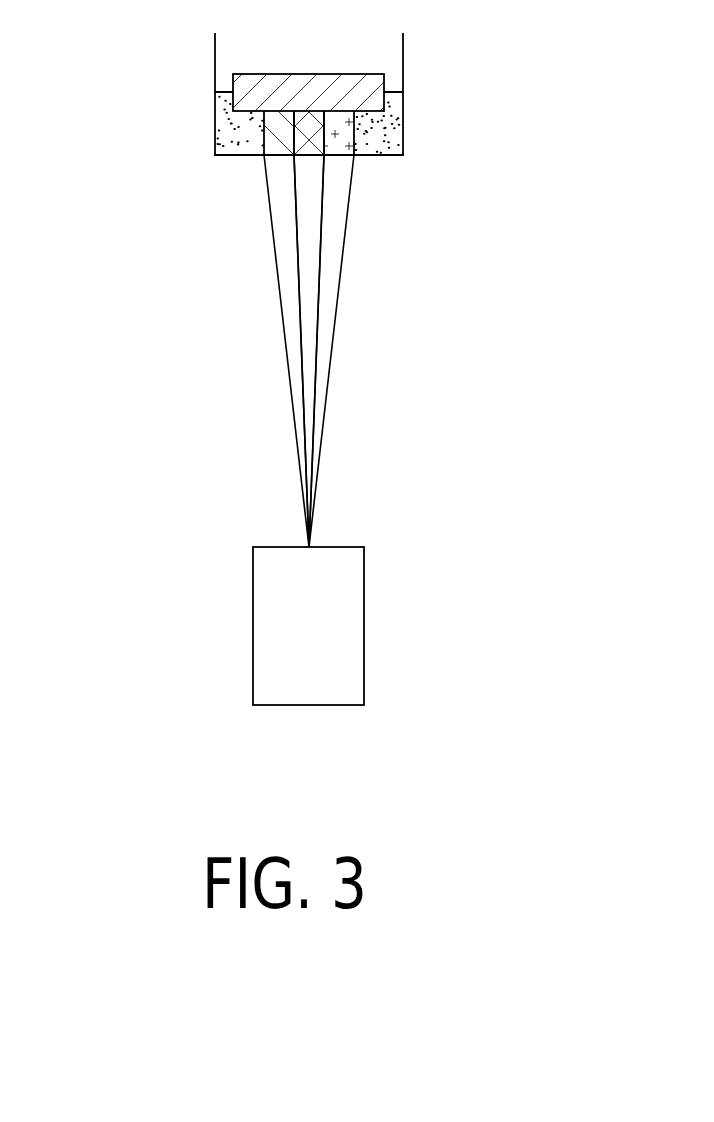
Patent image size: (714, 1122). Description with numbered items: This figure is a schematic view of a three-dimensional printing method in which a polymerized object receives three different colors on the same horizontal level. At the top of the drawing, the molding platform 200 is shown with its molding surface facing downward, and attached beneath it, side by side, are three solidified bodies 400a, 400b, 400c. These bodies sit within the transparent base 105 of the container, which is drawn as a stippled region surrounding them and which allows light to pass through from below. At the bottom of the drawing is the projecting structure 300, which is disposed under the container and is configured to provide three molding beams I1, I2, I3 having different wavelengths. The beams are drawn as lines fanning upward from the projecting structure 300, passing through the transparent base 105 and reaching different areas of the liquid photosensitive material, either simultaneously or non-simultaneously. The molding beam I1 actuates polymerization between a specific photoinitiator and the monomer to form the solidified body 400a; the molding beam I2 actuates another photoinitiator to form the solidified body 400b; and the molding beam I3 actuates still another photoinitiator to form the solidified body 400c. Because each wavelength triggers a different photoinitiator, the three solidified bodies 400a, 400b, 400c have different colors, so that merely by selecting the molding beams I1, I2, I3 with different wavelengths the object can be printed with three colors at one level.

The transparent base 105 is at (223, 137).
The molding platform 200 is at (312, 74).
The solidified body 400a is at (276, 140).
The solidified body 400b is at (318, 125).
The solidified body 400c is at (342, 133).
The molding beam I1 is at (290, 316).
The molding beam I2 is at (310, 278).
The molding beam I3 is at (326, 326).
The projecting structure 300 is at (309, 705).